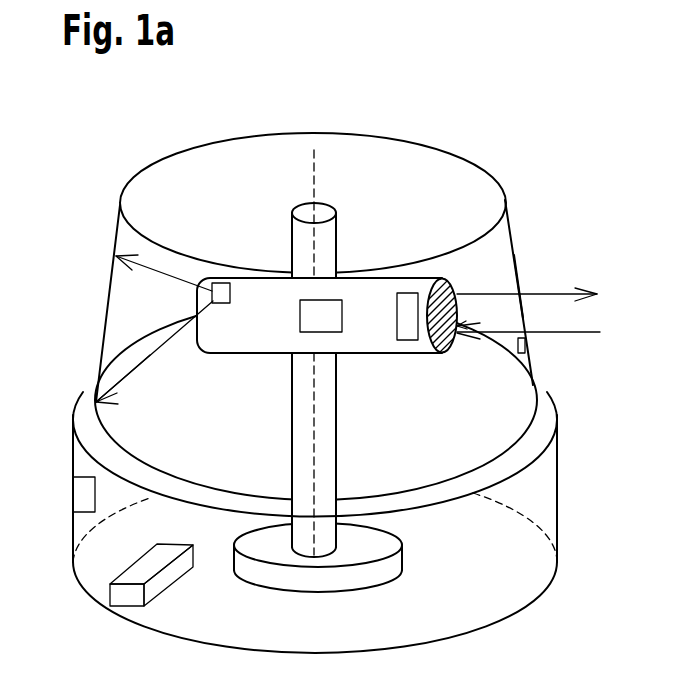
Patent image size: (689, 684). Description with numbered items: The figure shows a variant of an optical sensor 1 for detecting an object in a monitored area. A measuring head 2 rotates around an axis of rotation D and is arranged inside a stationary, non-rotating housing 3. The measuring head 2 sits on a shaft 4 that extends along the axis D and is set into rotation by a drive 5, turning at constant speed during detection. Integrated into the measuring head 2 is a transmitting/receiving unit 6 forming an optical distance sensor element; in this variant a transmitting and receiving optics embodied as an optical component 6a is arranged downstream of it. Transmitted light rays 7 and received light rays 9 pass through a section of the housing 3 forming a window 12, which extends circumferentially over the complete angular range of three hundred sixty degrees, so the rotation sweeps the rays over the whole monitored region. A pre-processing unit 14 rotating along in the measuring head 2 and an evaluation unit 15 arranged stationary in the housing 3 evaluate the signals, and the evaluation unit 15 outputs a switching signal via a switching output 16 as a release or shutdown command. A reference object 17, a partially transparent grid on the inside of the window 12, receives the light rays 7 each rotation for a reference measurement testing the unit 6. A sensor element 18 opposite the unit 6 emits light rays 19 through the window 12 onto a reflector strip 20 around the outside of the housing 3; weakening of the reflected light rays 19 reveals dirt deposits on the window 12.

The optical sensor 1 is at (630, 566).
The measuring head 2 is at (257, 366).
The housing 3 is at (499, 164).
The shaft 4 is at (328, 228).
The drive 5 is at (400, 544).
The transmitting/receiving unit 6 is at (405, 340).
The optical component 6a is at (443, 353).
The transmitted light rays 7 is at (553, 297).
The received light rays 9 is at (557, 334).
The window 12 is at (521, 282).
The pre-processing unit 14 is at (328, 326).
The evaluation unit 15 is at (166, 576).
The switching output 16 is at (85, 493).
The reference object 17 is at (517, 345).
The sensor element 18 is at (221, 283).
The light rays 19 is at (168, 274).
The reflector strip 20 is at (77, 399).
The axis of rotation D is at (317, 157).